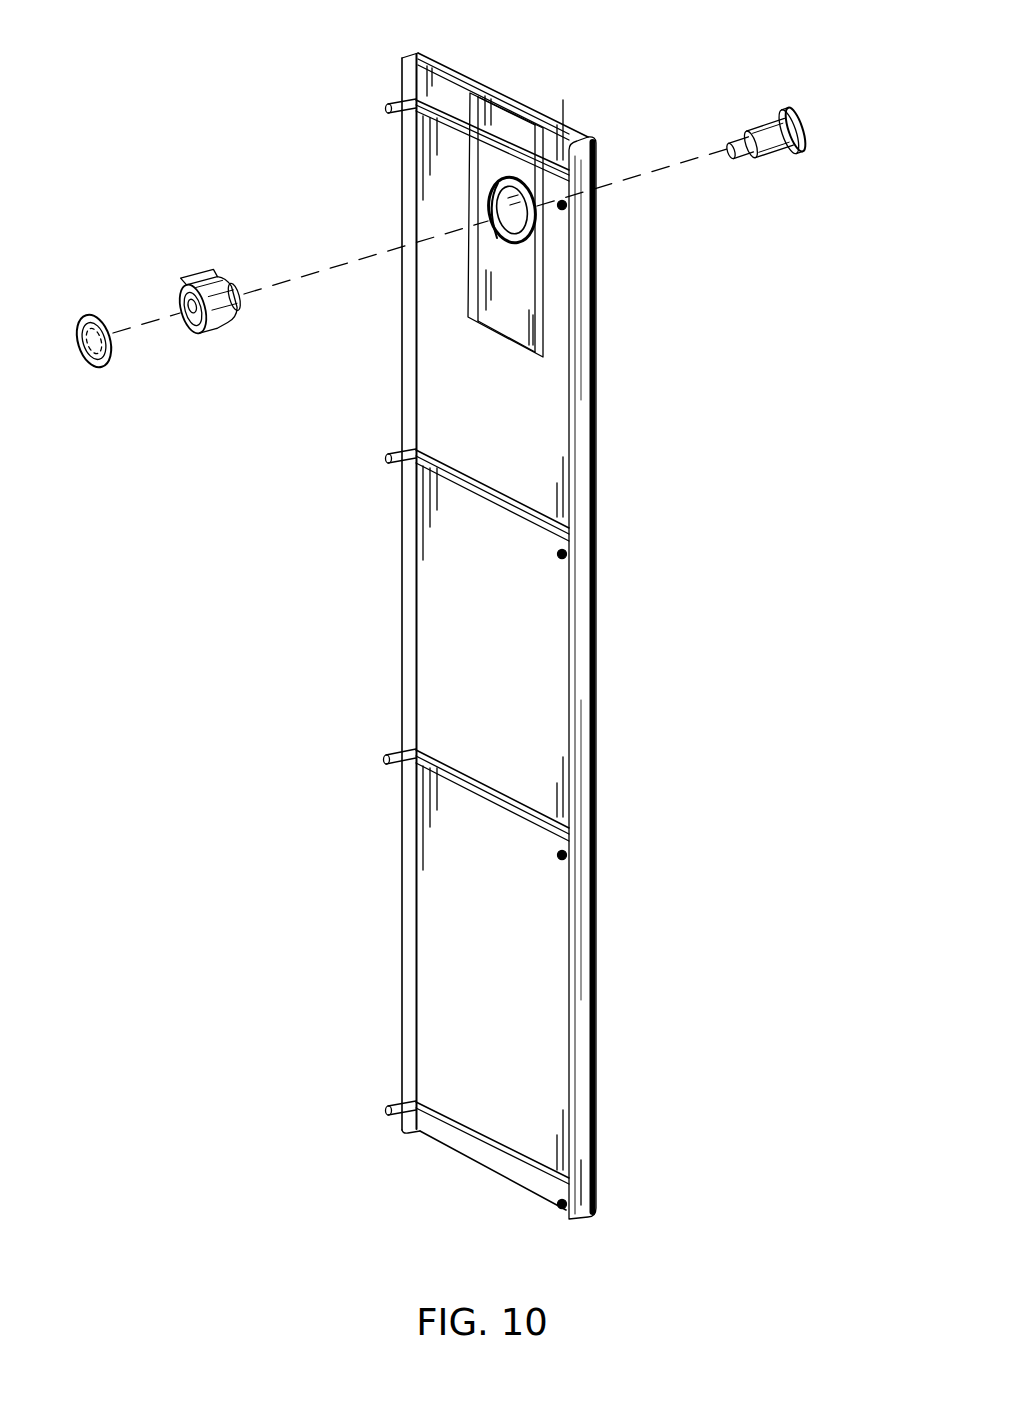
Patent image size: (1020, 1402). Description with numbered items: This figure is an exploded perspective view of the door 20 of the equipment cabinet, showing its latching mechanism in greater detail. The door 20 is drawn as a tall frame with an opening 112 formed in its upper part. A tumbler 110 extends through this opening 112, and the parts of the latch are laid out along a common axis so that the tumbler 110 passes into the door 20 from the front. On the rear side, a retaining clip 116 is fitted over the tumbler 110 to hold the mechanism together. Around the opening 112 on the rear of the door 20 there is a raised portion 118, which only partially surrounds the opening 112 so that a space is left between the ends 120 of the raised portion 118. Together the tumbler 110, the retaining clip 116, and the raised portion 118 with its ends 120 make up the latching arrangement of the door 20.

The door 20 is at (594, 710).
The tumbler 110 is at (763, 121).
The opening 112 is at (203, 273).
The retaining clip 116 is at (88, 314).
The raised portion 118 is at (523, 235).
The ends 120 is at (497, 185).